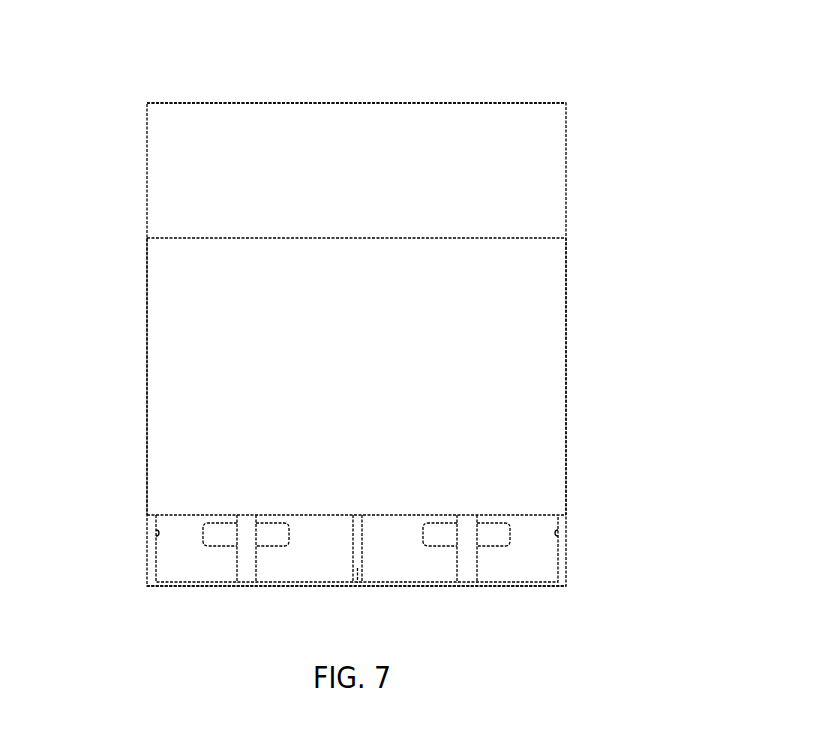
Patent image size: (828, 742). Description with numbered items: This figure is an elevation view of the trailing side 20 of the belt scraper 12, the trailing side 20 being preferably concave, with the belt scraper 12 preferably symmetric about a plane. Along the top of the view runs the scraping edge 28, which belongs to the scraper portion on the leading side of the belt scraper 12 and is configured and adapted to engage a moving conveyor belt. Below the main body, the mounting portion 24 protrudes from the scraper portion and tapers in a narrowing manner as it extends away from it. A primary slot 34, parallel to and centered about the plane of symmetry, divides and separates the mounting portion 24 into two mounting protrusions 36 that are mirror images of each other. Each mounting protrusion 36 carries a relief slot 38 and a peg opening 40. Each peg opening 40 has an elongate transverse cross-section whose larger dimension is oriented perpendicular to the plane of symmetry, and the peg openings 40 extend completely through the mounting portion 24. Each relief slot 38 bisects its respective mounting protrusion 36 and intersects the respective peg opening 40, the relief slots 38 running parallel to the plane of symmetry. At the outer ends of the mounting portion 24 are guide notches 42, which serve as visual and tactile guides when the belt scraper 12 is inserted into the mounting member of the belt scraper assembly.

The belt scraper 12 is at (618, 236).
The trailing side 20 is at (163, 381).
The mounting portion 24 is at (182, 572).
The scraping edge 28 is at (237, 102).
The primary slot 34 is at (356, 585).
The mounting protrusions 36 is at (165, 563).
The relief slot 38 is at (246, 560).
The peg opening 40 is at (222, 535).
The guide notches 42 is at (158, 533).